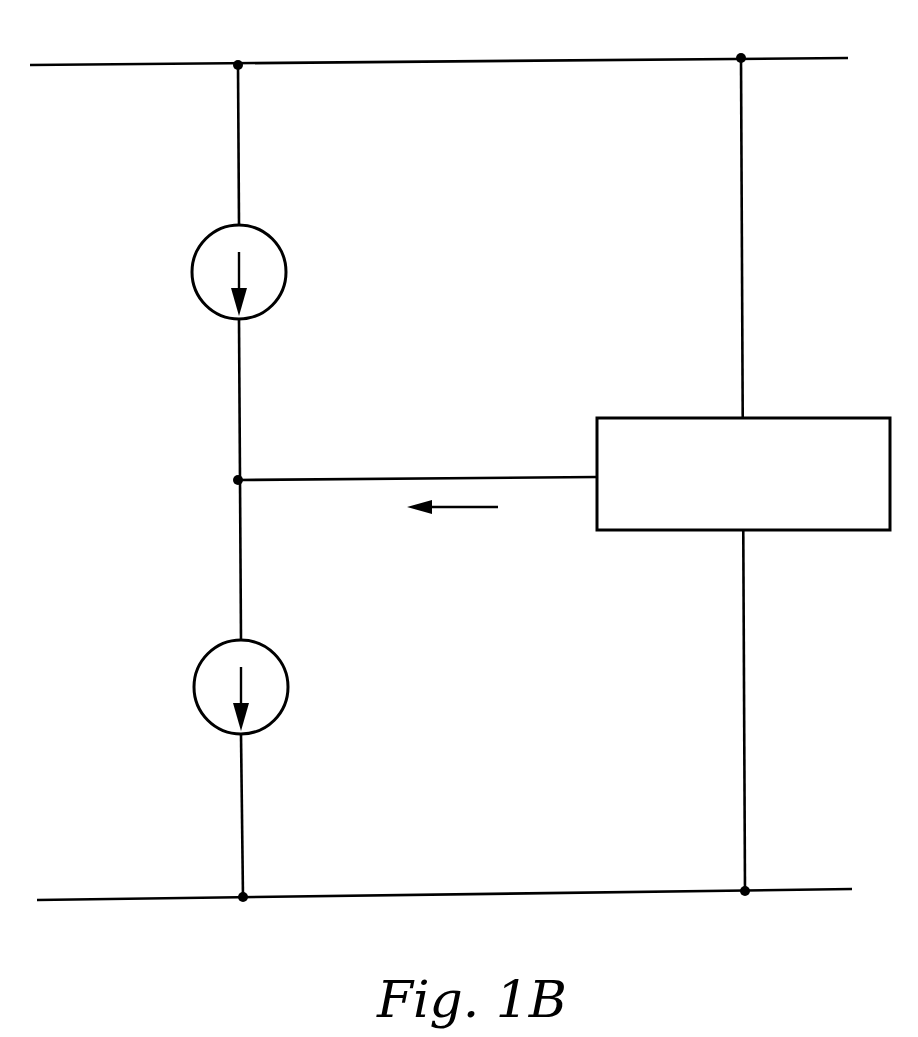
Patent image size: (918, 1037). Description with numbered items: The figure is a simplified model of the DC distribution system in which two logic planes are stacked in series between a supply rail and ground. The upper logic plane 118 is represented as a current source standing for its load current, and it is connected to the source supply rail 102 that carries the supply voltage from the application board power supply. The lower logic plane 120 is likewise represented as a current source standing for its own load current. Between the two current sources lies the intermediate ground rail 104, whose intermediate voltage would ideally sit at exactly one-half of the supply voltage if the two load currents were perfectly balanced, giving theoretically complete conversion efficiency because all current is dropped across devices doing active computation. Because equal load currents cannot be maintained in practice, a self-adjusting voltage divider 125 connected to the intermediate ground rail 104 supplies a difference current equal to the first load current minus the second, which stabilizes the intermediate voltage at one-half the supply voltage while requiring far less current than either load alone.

The source supply rail 102 is at (168, 28).
The intermediate ground rail 104 is at (430, 479).
The logic plane 118 is at (192, 278).
The logic plane 120 is at (194, 692).
The self-adjusting voltage divider 125 is at (838, 418).